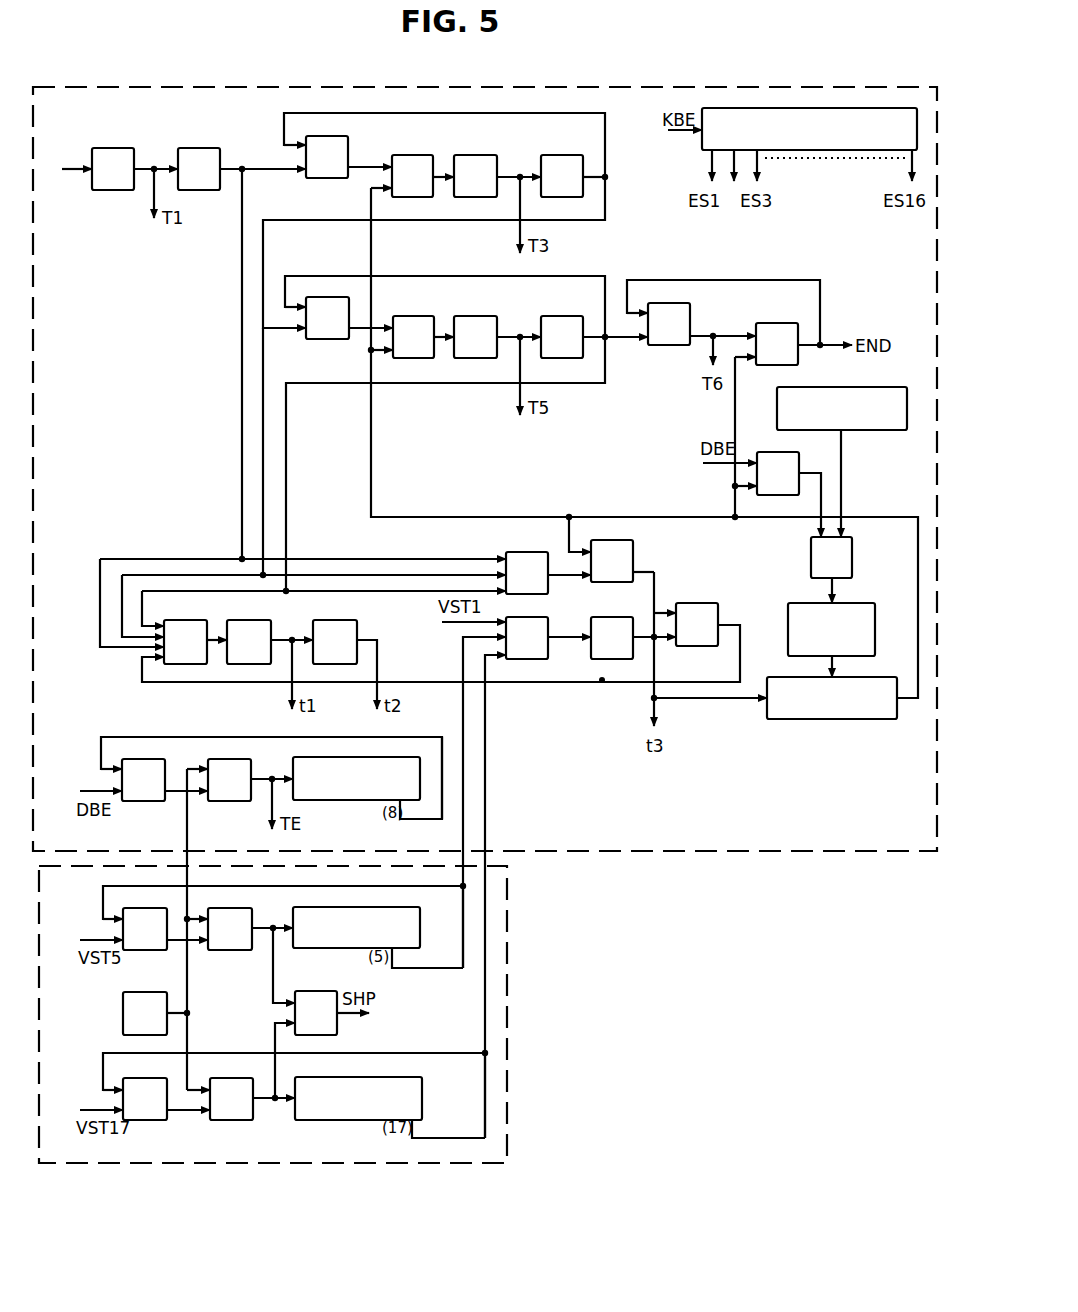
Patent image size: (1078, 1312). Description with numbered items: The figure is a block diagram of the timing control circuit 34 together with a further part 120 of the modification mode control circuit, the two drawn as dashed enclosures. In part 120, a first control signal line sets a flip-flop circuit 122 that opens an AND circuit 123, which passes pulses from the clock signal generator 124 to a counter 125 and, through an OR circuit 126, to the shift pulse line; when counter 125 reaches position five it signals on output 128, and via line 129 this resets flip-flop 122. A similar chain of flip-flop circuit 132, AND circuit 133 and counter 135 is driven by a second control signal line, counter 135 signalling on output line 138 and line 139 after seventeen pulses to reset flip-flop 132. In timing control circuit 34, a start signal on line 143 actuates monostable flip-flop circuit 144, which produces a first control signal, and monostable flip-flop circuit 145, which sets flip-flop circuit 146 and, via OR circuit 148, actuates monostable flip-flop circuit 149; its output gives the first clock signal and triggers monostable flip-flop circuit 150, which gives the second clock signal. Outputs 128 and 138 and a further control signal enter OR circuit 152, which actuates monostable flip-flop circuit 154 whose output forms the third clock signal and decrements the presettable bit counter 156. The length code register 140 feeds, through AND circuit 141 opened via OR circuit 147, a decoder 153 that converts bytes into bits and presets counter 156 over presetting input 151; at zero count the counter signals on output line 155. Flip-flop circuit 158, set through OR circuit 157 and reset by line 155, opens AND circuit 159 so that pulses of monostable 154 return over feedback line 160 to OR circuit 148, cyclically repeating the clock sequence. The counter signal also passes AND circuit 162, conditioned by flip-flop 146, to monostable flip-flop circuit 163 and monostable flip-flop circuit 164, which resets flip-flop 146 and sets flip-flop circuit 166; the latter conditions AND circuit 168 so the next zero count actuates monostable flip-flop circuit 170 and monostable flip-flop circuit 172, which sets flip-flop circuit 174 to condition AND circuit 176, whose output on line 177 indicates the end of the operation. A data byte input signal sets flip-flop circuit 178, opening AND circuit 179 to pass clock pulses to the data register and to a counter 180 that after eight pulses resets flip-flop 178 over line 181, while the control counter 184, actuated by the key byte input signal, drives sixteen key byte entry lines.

The timing control circuit 34 is at (772, 851).
The further part of the modification mode control circuit 120 is at (505, 1053).
The flip-flop circuit 122 is at (150, 900).
The AND circuit 123 is at (236, 900).
The clock signal generator 124 is at (149, 984).
The counter 125 is at (322, 907).
The OR circuit 126 is at (320, 983).
The output 128 is at (465, 918).
The line 129 is at (426, 884).
The flip-flop circuit 132 is at (150, 1070).
The AND circuit 133 is at (236, 1070).
The counter 135 is at (325, 1077).
The output line 138 is at (487, 993).
The line 139 is at (434, 1054).
The length code register 140 is at (891, 386).
The AND circuit 141 is at (853, 557).
The line 143 is at (68, 172).
The monostable flip-flop circuit 144 is at (108, 150).
The monostable flip-flop circuit 145 is at (194, 150).
The flip-flop circuit 146 is at (328, 180).
The OR circuit 147 is at (808, 449).
The OR circuit 148 is at (192, 612).
The monostable flip-flop circuit 149 is at (256, 612).
The monostable flip-flop circuit 150 is at (342, 612).
The presetting input 151 is at (836, 672).
The OR circuit 152 is at (536, 611).
The decoder 153 is at (876, 616).
The monostable flip-flop circuit 154 is at (618, 610).
The output line 155 is at (880, 516).
The bit counter 156 is at (866, 714).
The OR circuit 157 is at (533, 547).
The flip-flop circuit 158 is at (634, 552).
The AND circuit 159 is at (700, 608).
The feedback line 160 is at (600, 681).
The AND circuit 162 is at (410, 150).
The monostable flip-flop circuit 163 is at (474, 150).
The monostable flip-flop circuit 164 is at (560, 150).
The flip-flop circuit 166 is at (328, 340).
The AND circuit 168 is at (410, 312).
The monostable flip-flop circuit 170 is at (474, 312).
The monostable flip-flop circuit 172 is at (560, 312).
The flip-flop circuit 174 is at (690, 316).
The AND circuit 176 is at (777, 323).
The line 177 is at (829, 342).
The flip-flop circuit 178 is at (150, 752).
The AND circuit 179 is at (236, 752).
The counter 180 is at (361, 750).
The line 181 is at (442, 750).
The control counter 184 is at (863, 114).